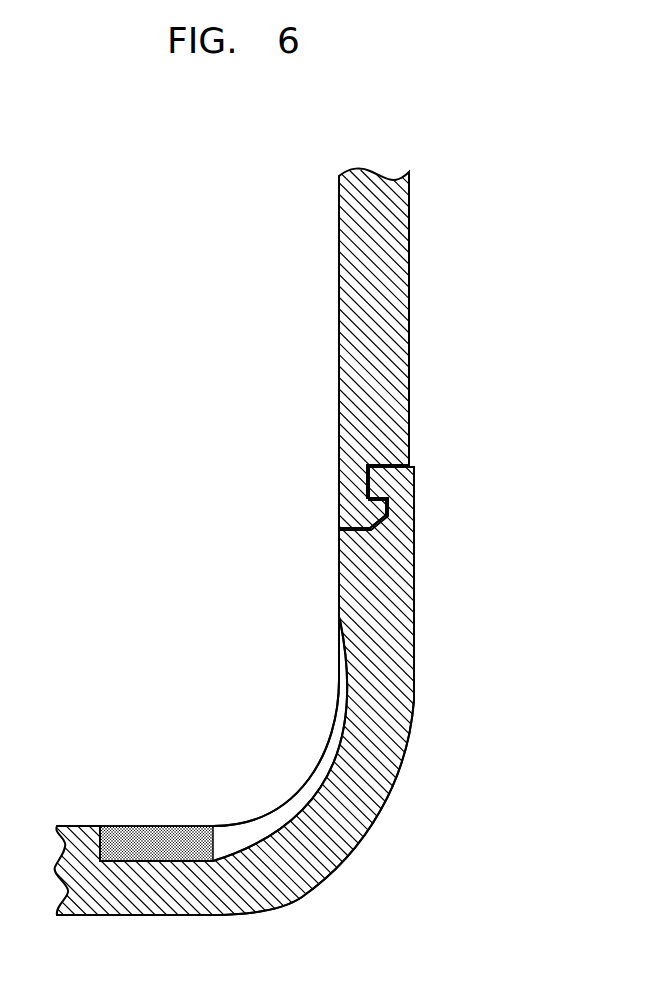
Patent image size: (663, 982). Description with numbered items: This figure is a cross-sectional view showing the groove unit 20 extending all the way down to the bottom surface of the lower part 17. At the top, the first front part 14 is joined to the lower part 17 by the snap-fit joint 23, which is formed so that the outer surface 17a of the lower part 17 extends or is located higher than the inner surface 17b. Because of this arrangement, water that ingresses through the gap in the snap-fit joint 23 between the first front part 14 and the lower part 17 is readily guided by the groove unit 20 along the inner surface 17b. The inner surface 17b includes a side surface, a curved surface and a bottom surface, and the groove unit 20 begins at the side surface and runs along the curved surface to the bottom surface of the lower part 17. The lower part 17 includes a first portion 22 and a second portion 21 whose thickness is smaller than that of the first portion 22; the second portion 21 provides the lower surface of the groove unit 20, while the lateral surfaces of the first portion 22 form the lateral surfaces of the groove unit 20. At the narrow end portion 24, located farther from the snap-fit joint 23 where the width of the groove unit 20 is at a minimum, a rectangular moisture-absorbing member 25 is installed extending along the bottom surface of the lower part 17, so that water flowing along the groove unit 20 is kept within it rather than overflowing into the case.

The first front part 14 is at (409, 321).
The lower part 17 is at (447, 589).
The outer surface of the lower part 17a is at (414, 547).
The inner surface of the lower part 17b is at (338, 534).
The groove unit 20 is at (297, 729).
The second portion 21 is at (407, 732).
The first portion 22 is at (315, 757).
The snap-fit joint 23 is at (414, 466).
The narrow end portion 24 is at (128, 836).
The moisture-absorbing member 25 is at (175, 826).